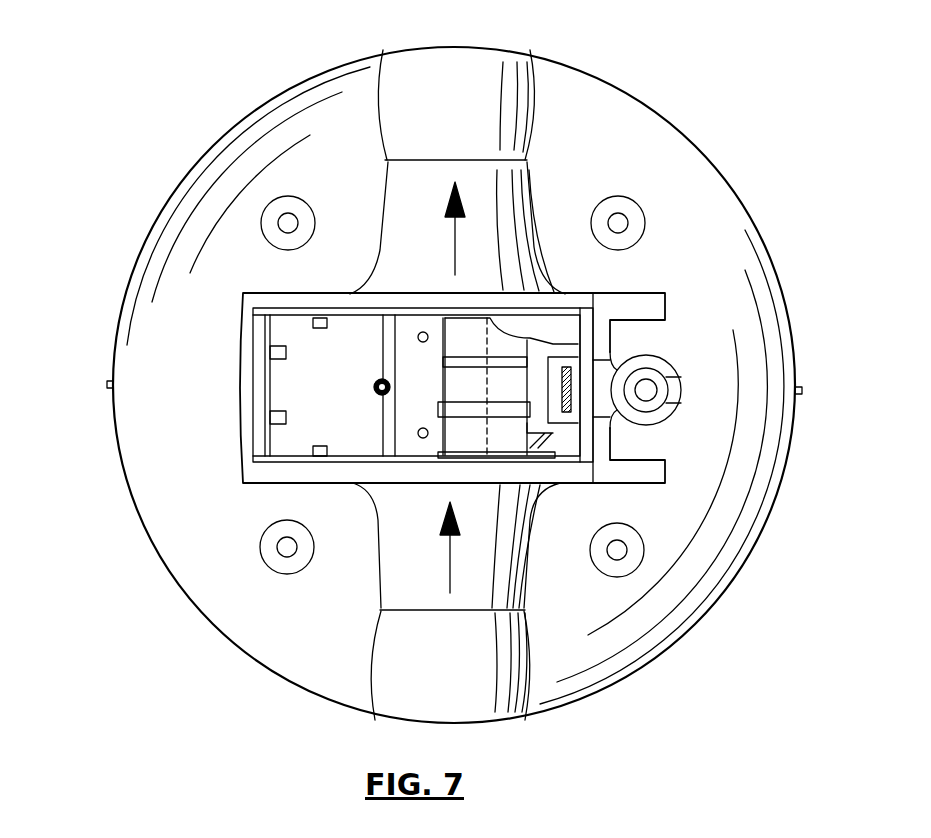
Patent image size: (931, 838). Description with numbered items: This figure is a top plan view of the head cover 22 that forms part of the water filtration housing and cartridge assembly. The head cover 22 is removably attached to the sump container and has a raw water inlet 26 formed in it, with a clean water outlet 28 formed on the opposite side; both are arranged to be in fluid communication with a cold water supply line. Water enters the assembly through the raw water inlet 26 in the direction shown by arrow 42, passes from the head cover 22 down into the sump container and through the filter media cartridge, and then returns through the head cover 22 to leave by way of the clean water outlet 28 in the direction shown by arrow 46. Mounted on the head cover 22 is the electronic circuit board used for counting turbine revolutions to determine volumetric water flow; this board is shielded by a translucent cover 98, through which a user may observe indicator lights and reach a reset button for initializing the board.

The head cover 22 is at (178, 192).
The raw water inlet 26 is at (505, 722).
The clean water outlet 28 is at (483, 48).
The arrow 42 is at (451, 563).
The arrow 46 is at (453, 245).
The translucent cover 98 is at (253, 357).